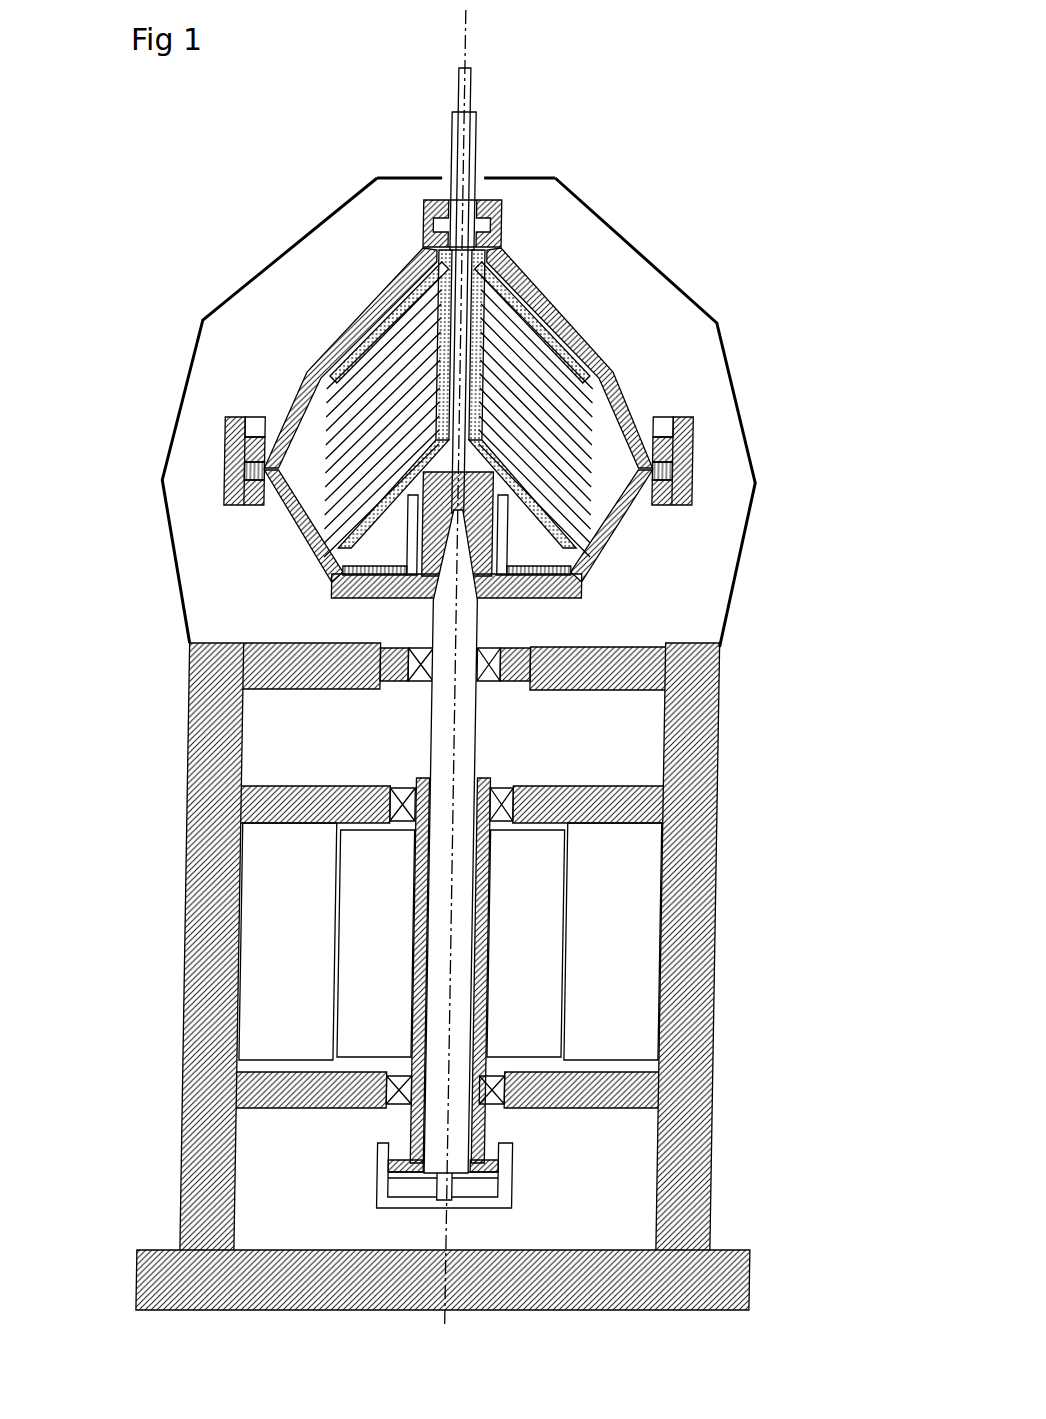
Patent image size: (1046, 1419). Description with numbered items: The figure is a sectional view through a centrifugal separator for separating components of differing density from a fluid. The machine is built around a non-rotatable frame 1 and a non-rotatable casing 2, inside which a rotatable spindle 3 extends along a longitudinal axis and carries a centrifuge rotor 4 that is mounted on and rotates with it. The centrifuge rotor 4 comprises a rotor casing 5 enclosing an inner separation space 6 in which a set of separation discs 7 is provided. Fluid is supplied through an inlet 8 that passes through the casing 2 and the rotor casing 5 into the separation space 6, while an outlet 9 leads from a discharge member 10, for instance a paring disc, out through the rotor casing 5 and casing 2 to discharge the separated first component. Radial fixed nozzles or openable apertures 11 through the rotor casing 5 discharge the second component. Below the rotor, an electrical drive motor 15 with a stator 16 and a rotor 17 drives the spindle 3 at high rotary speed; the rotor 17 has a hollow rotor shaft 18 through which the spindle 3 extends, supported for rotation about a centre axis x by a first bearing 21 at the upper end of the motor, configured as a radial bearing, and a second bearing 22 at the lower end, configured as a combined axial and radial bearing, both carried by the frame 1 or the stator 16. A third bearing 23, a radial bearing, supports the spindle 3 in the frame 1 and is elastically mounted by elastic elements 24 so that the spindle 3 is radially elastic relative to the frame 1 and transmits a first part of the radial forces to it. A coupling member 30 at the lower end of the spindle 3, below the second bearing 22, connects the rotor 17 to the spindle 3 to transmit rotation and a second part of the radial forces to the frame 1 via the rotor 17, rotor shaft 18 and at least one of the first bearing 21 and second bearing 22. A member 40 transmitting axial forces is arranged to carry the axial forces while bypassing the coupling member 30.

The frame 1 is at (224, 685).
The casing 2 is at (624, 240).
The spindle 3 is at (455, 722).
The centrifuge rotor 4 is at (590, 333).
The rotor casing 5 is at (631, 383).
The separation space 6 is at (617, 465).
The separation discs 7 is at (389, 403).
The inlet 8 is at (466, 73).
The outlet 9 is at (478, 140).
The discharge member 10 is at (481, 222).
The nozzles or openable apertures 11 is at (242, 460).
The electrical drive motor 15 is at (356, 970).
The stator 16 is at (297, 913).
The rotor 17 is at (373, 945).
The hollow rotor shaft 18 is at (428, 1000).
The first bearing 21 is at (520, 790).
The second bearing 22 is at (510, 1076).
The third bearing 23 is at (506, 681).
The elastic elements 24 is at (540, 648).
The coupling member 30 is at (406, 1158).
The member transmitting axial forces 40 is at (532, 1180).
The centre axis x is at (470, 30).